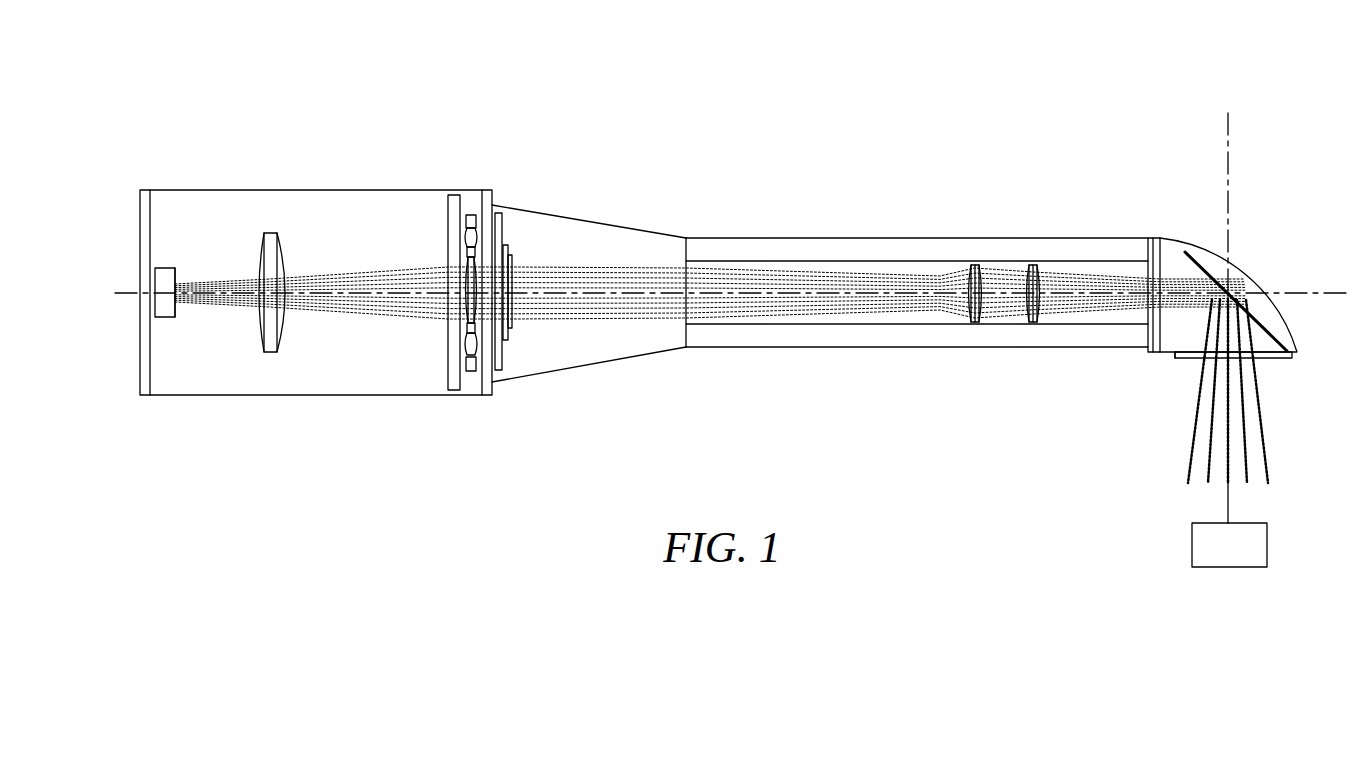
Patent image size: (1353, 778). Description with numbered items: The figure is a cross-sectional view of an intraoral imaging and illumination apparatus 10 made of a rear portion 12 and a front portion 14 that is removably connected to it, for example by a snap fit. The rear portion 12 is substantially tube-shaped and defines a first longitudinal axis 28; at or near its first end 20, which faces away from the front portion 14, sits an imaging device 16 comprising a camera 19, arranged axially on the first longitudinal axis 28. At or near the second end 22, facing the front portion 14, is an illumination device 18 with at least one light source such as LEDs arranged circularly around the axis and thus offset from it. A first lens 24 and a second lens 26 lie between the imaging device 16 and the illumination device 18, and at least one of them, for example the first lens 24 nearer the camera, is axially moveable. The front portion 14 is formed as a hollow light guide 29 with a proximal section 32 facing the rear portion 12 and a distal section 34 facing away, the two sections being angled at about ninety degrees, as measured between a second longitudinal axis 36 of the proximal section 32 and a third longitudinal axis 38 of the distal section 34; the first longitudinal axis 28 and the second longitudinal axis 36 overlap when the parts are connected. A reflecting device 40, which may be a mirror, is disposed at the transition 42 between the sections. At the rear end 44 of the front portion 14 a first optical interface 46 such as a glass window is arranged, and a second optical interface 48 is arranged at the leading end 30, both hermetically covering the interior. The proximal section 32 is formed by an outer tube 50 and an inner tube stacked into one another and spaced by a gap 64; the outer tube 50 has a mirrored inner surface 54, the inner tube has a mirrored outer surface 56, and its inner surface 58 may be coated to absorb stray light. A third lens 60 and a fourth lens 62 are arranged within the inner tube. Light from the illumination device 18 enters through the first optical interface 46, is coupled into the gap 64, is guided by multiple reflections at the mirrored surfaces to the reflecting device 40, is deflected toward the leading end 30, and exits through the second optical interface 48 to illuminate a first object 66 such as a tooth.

The intraoral imaging and illumination apparatus 10 is at (250, 97).
The rear portion 12 is at (397, 190).
The front portion 14 is at (750, 218).
The imaging device 16 is at (160, 282).
The illumination device 18 is at (473, 218).
The camera 19 is at (175, 313).
The first end 20 is at (143, 361).
The second end 22 is at (470, 195).
The first lens 24 is at (270, 233).
The second lens 26 is at (465, 318).
The first longitudinal axis 28 is at (218, 262).
The light guide 29 is at (905, 238).
The leading end 30 is at (1273, 363).
The proximal section 32 is at (808, 225).
The distal section 34 is at (1212, 262).
The second longitudinal axis 36 is at (950, 275).
The third longitudinal axis 38 is at (1230, 502).
The reflecting device 40 is at (1232, 290).
The transition 42 is at (1212, 262).
The rear end 44 is at (498, 213).
The first optical interface 46 is at (503, 355).
The second optical interface 48 is at (1183, 362).
The outer tube 50 is at (686, 238).
The mirrored inner surface 54 is at (853, 318).
The mirrored outer surface 56 is at (940, 324).
The inner surface of the inner tube 58 is at (840, 268).
The third lens 60 is at (981, 272).
The fourth lens 62 is at (718, 325).
The gap 64 is at (645, 340).
The first object 66 is at (1267, 548).